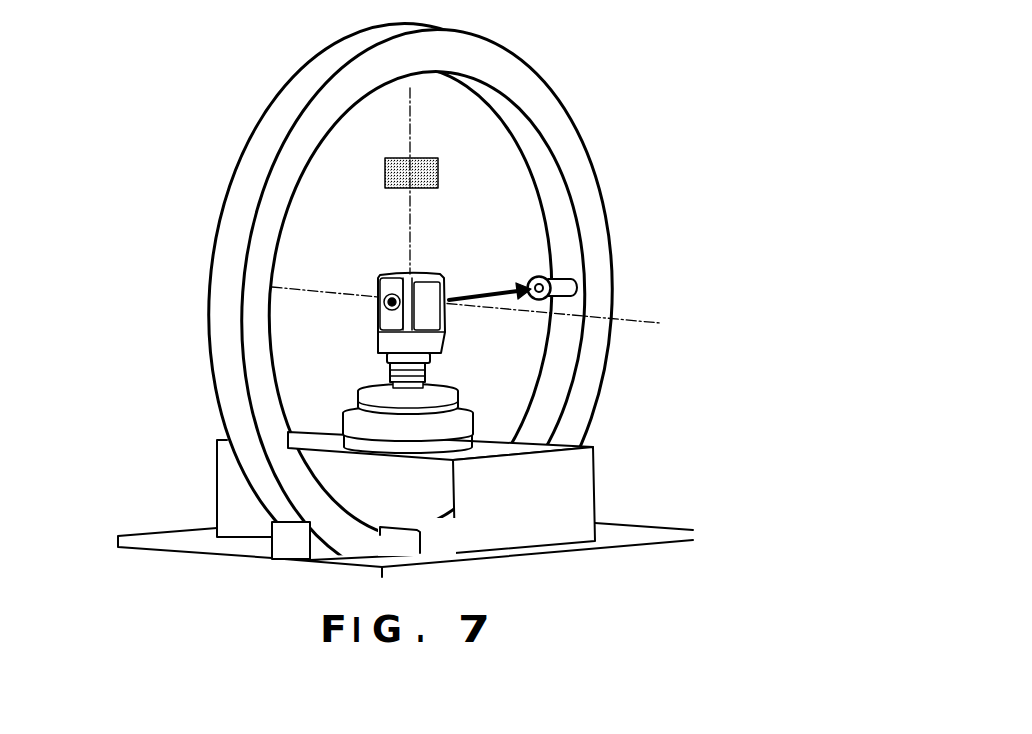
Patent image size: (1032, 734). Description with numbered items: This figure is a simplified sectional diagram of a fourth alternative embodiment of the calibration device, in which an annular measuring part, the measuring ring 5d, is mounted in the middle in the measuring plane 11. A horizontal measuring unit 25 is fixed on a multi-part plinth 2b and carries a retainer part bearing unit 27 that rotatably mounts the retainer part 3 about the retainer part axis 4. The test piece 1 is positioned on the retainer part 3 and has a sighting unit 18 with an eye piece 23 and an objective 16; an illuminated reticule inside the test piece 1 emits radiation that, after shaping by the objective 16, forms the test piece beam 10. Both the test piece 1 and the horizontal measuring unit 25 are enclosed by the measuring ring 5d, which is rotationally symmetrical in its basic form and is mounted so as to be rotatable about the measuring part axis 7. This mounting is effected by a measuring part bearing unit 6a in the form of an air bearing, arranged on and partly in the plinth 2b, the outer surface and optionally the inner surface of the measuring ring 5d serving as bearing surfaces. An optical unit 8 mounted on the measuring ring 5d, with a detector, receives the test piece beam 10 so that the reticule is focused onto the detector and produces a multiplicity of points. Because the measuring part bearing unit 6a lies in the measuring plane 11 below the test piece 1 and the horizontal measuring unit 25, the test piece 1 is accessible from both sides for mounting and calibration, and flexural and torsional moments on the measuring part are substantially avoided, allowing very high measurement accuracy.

The test piece 1 is at (458, 256).
The plinth 2b is at (642, 535).
The retainer part 3 is at (392, 363).
The retainer part axis 4 is at (410, 120).
The measuring ring 5d is at (258, 163).
The measuring part bearing unit 6a is at (285, 541).
The measuring part axis 7 is at (640, 322).
The optical unit 8 is at (563, 286).
The test piece beam 10 is at (537, 287).
The measuring plane 11 is at (427, 170).
The objective 16 is at (447, 293).
The sighting unit 18 is at (413, 229).
The eye piece 23 is at (386, 301).
The horizontal measuring unit 25 is at (498, 403).
The retainer part bearing unit 27 is at (370, 398).